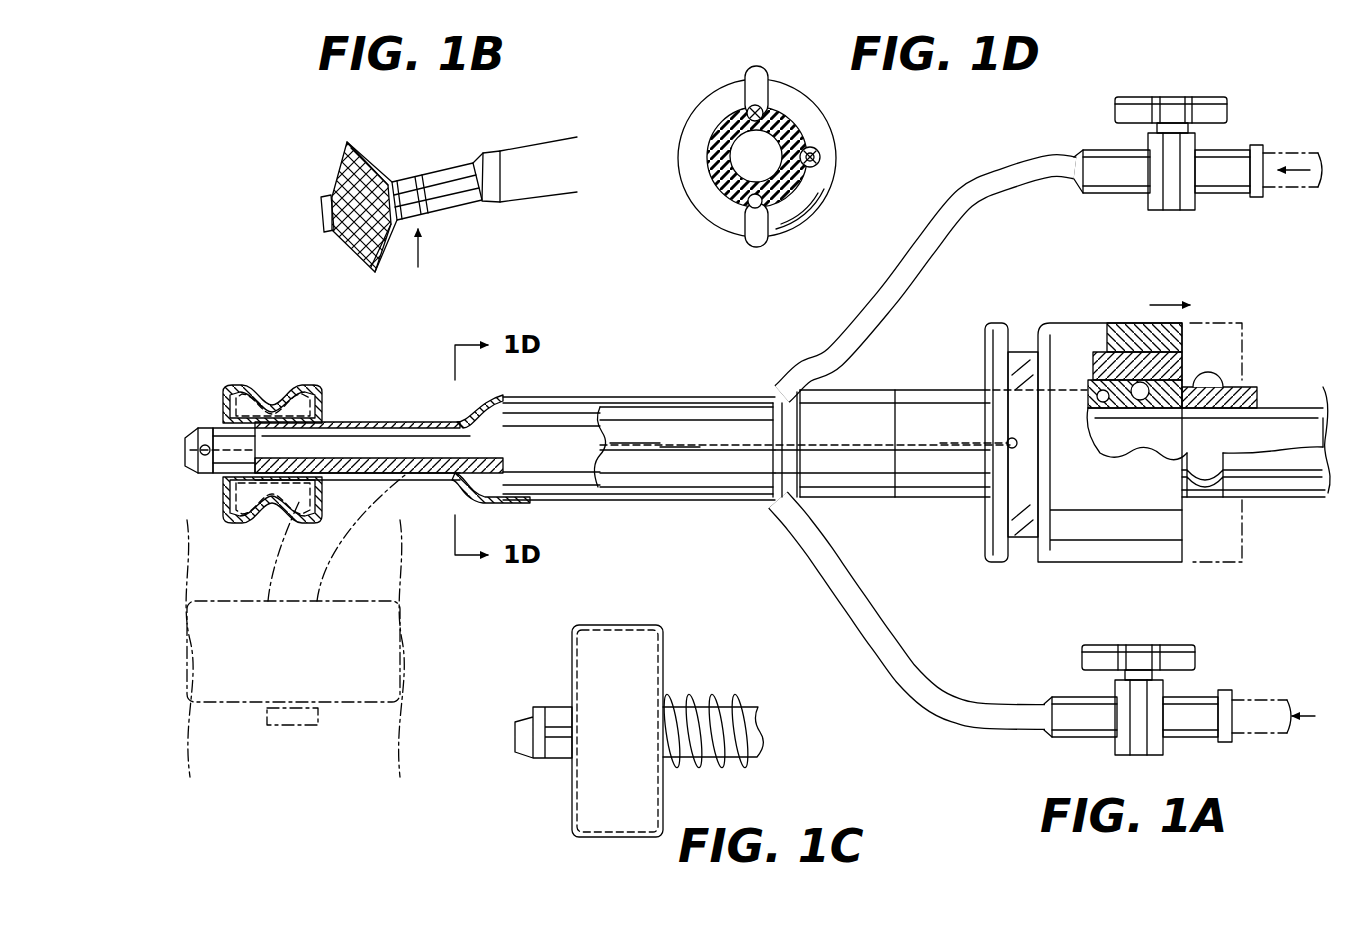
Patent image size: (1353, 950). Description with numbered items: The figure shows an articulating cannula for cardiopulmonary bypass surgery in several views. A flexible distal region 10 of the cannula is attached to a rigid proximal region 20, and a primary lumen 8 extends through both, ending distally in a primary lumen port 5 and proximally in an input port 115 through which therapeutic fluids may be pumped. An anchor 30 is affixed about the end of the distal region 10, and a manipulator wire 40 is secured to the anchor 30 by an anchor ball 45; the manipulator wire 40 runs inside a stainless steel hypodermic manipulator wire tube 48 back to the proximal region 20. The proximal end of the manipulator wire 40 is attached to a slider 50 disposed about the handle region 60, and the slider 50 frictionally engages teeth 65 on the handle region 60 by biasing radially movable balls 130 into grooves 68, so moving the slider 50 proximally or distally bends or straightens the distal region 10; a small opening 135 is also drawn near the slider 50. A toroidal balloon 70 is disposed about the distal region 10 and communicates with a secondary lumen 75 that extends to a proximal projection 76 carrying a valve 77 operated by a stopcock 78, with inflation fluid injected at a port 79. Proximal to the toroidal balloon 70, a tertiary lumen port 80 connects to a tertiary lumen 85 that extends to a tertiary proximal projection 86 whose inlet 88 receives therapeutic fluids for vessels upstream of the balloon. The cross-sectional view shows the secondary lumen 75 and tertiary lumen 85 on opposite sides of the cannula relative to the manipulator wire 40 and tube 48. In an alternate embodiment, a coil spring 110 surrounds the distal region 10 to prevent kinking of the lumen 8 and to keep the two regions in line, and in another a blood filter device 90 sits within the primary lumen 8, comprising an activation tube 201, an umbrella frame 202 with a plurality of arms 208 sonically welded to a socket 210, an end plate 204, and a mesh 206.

In FIG. 1A, the primary lumen port 5 is at (185, 447).
In FIG. 1A, the primary lumen 8 is at (378, 460).
In FIG. 1D, the primary lumen 8 is at (790, 122).
In FIG. 1C, the primary lumen 8 is at (704, 712).
In FIG. 1A, the flexible distal region 10 is at (413, 404).
In FIG. 1B, the flexible distal region 10 is at (541, 130).
In FIG. 1C, the flexible distal region 10 is at (775, 706).
In FIG. 1A, the rigid proximal region 20 is at (640, 402).
In FIG. 1D, the rigid proximal region 20 is at (677, 180).
In FIG. 1A, the anchor 30 is at (206, 476).
In FIG. 1B, the anchor 30 is at (487, 204).
In FIG. 1A, the manipulator wire 40 is at (637, 448).
In FIG. 1D, the manipulator wire 40 is at (819, 153).
In FIG. 1A, the anchor ball 45 is at (205, 434).
In FIG. 1A, the manipulator wire tube 48 is at (672, 451).
In FIG. 1D, the manipulator wire tube 48 is at (819, 162).
In FIG. 1A, the slider 50 is at (1080, 322).
In FIG. 1A, the handle region 60 is at (1287, 505).
In FIG. 1A, the teeth 65 is at (1195, 388).
In FIG. 1A, the grooves 68 is at (1206, 497).
In FIG. 1A, the toroidal balloon 70 is at (320, 388).
In FIG. 1C, the toroidal balloon 70 is at (648, 652).
In FIG. 1A, the secondary lumen 75 is at (481, 403).
In FIG. 1D, the secondary lumen 75 is at (747, 108).
In FIG. 1A, the proximal projection 76 is at (817, 366).
In FIG. 1D, the proximal projection 76 is at (768, 72).
In FIG. 1A, the valve 77 is at (1170, 198).
In FIG. 1A, the stopcock 78 is at (1210, 100).
In FIG. 1A, the port 79 is at (1264, 152).
In FIG. 1A, the tertiary lumen port 80 is at (460, 482).
In FIG. 1A, the tertiary lumen 85 is at (691, 400).
In FIG. 1D, the tertiary lumen 85 is at (750, 206).
In FIG. 1D, the tertiary proximal projection 86 is at (768, 240).
In FIG. 1A, the inlet 88 is at (1232, 728).
In FIG. 1B, the blood filter device 90 is at (311, 148).
In FIG. 1C, the coil spring 110 is at (742, 700).
In FIG. 1A, the input port 115 is at (1323, 470).
In FIG. 1A, the radially movable balls 130 is at (1138, 380).
In FIG. 1A, the port 135 is at (1008, 441).
In FIG. 1B, the activation tube 201 is at (441, 194).
In FIG. 1B, the umbrella frame 202 is at (396, 243).
In FIG. 1B, the end plate 204 is at (327, 233).
In FIG. 1B, the mesh 206 is at (345, 163).
In FIG. 1B, the arms 208 is at (367, 170).
In FIG. 1B, the socket 210 is at (390, 180).